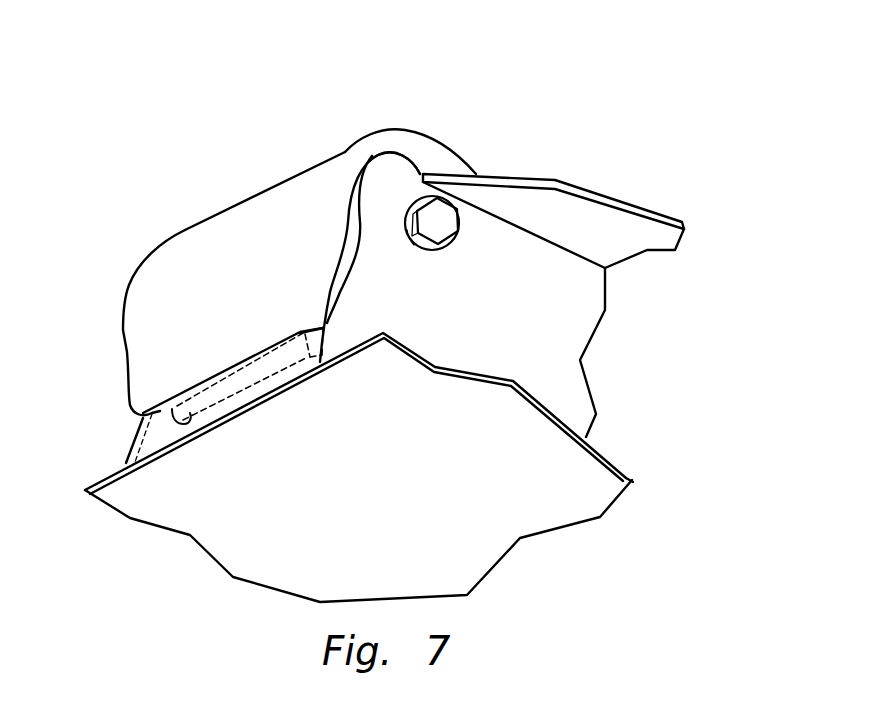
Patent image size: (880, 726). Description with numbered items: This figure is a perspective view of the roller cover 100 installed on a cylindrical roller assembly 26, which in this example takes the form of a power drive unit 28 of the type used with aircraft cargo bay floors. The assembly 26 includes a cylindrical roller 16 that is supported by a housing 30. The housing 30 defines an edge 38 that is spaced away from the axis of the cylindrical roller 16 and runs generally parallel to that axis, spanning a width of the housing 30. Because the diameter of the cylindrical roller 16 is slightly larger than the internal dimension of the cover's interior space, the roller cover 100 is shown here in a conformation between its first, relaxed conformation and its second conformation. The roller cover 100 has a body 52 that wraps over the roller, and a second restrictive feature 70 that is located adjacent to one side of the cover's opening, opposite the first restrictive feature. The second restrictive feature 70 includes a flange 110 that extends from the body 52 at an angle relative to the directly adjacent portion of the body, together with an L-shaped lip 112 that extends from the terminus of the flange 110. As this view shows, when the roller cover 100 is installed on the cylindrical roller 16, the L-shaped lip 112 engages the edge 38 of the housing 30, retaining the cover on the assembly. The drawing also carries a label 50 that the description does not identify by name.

The cylindrical roller 16 is at (383, 164).
The cylindrical roller assembly 26 is at (661, 83).
The power drive unit 28 is at (602, 74).
The housing 30 is at (621, 183).
The edge 38 is at (330, 312).
The cover assembly 50 is at (124, 158).
The body 52 is at (252, 197).
The second restrictive feature 70 is at (198, 420).
The roller cover 100 is at (147, 236).
The flange 110 is at (143, 381).
The L-shaped lip 112 is at (250, 383).